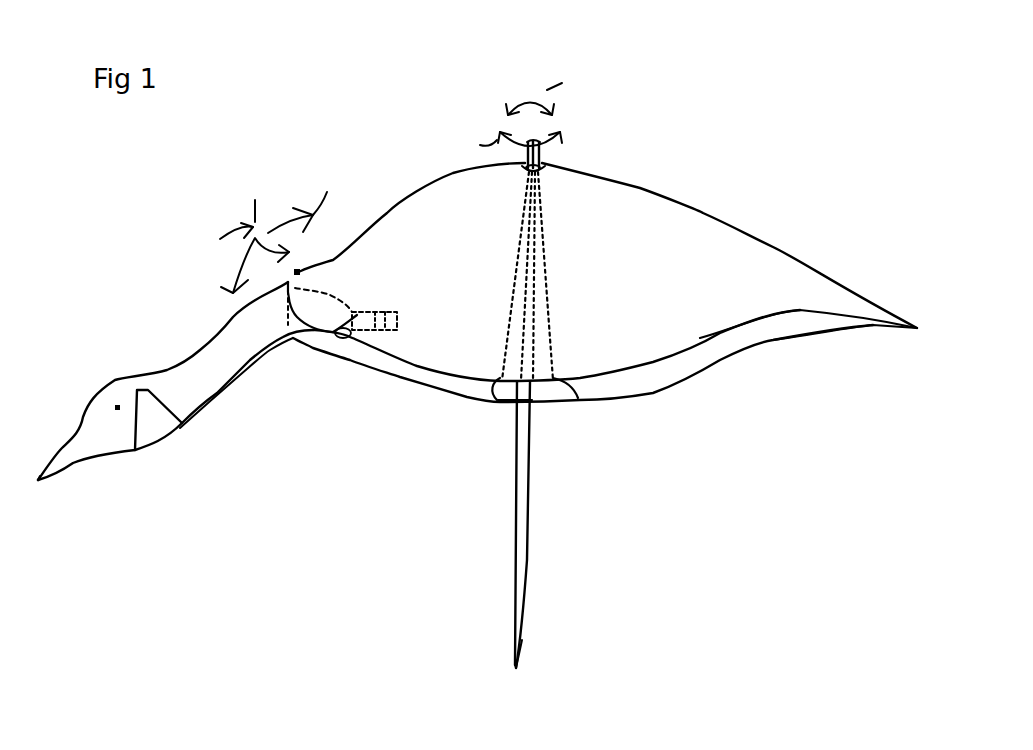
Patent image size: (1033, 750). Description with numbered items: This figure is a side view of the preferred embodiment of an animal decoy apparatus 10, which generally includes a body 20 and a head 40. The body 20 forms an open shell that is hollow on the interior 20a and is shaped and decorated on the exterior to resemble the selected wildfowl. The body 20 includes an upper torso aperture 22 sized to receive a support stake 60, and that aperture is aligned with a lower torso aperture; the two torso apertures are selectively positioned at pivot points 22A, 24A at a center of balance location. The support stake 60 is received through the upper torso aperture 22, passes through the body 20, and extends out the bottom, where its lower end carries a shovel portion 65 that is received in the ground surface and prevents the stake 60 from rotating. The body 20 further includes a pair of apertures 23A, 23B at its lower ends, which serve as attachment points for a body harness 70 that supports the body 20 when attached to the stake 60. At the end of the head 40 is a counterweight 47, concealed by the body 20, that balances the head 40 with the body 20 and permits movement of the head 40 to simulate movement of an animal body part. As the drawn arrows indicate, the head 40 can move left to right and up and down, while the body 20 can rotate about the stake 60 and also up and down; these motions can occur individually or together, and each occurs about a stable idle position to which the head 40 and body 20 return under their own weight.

The decoy apparatus 10 is at (752, 135).
The body 20 is at (683, 228).
The interior 20a is at (678, 365).
The upper torso aperture 22 is at (560, 160).
The pivot point 22A is at (523, 163).
The aperture 23A is at (495, 388).
The aperture 23B is at (573, 380).
The pivot point 24A is at (547, 380).
The head 40 is at (115, 382).
The counterweight 47 is at (340, 337).
The support stake 60 is at (518, 570).
The shovel portion 65 is at (512, 648).
The body harness 70 is at (495, 388).